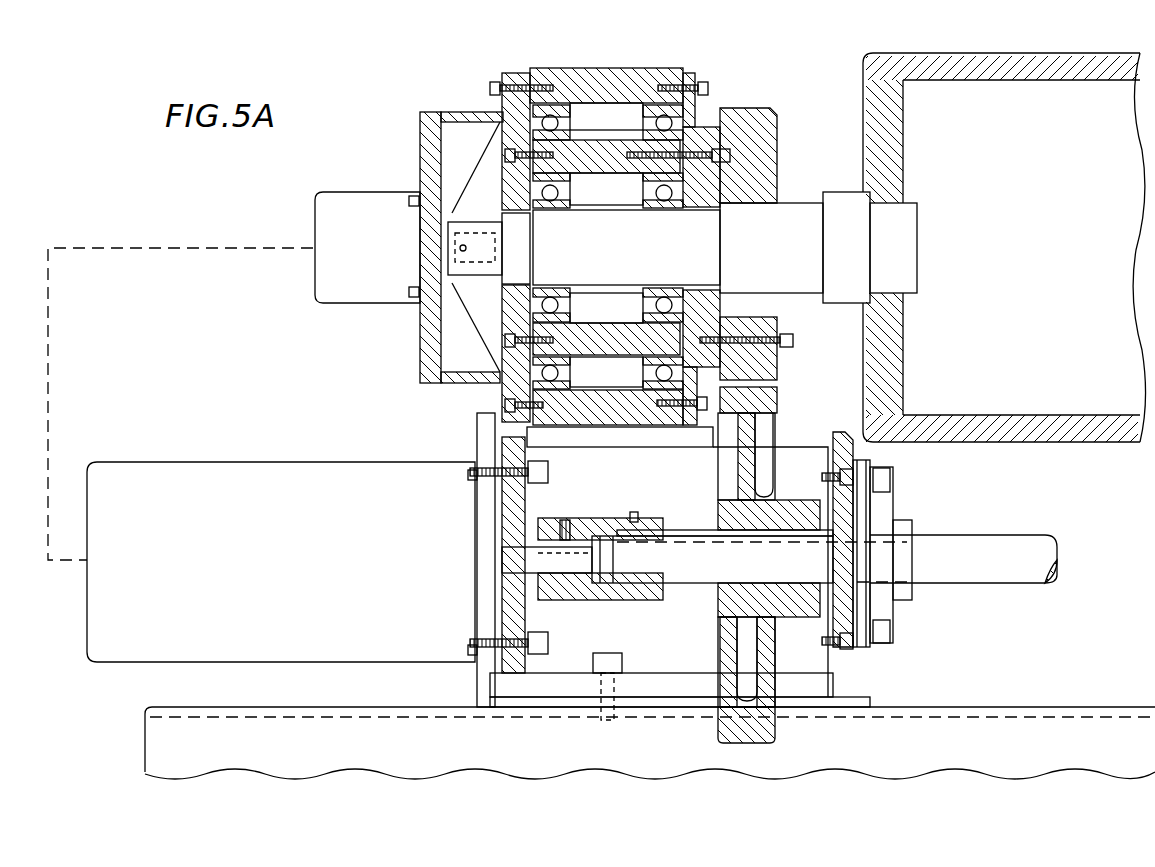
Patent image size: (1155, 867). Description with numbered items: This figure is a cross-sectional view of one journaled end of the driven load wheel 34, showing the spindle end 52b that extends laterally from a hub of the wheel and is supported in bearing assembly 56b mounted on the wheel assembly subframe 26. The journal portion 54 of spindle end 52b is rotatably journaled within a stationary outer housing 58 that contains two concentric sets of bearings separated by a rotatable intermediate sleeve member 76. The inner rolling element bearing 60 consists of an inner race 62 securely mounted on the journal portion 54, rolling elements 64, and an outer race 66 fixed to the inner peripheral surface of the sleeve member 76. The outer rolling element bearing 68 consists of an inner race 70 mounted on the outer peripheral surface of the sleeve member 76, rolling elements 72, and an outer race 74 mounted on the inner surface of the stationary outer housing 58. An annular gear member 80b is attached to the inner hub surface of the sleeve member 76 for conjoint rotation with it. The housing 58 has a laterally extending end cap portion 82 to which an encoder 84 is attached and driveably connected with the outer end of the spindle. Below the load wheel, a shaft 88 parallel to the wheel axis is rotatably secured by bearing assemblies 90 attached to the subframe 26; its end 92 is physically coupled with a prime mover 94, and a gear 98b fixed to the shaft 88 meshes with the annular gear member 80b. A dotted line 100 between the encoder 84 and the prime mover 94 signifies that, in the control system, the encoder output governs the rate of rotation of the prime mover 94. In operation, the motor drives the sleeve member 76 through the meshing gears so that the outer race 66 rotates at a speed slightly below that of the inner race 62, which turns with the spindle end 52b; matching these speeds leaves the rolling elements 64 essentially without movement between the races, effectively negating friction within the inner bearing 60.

The wheel assembly subframe 26 is at (378, 718).
The load wheel 34 is at (1035, 430).
The spindle end 52b is at (783, 275).
The journal portion 54 is at (611, 247).
The bearing assembly 56b is at (688, 50).
The stationary outer housing 58 is at (625, 72).
The inner rolling element bearing 60 is at (645, 182).
The inner race 62 is at (560, 212).
The rolling elements 64 is at (670, 195).
The outer race 66 is at (534, 185).
The outer rolling element bearing 68 is at (660, 375).
The inner race 70 is at (530, 362).
The rolling elements 72 is at (659, 380).
The outer race 74 is at (557, 390).
The intermediate sleeve member 76 is at (576, 342).
The annular gear member 80b is at (770, 153).
The end cap portion 82 is at (456, 111).
The encoder 84 is at (350, 287).
The shaft 88 is at (1005, 567).
The bearing assemblies 90 is at (883, 505).
The shaft end 92 is at (640, 566).
The prime mover 94 is at (282, 562).
The gear 98b is at (720, 651).
The dotted line 100 is at (57, 386).